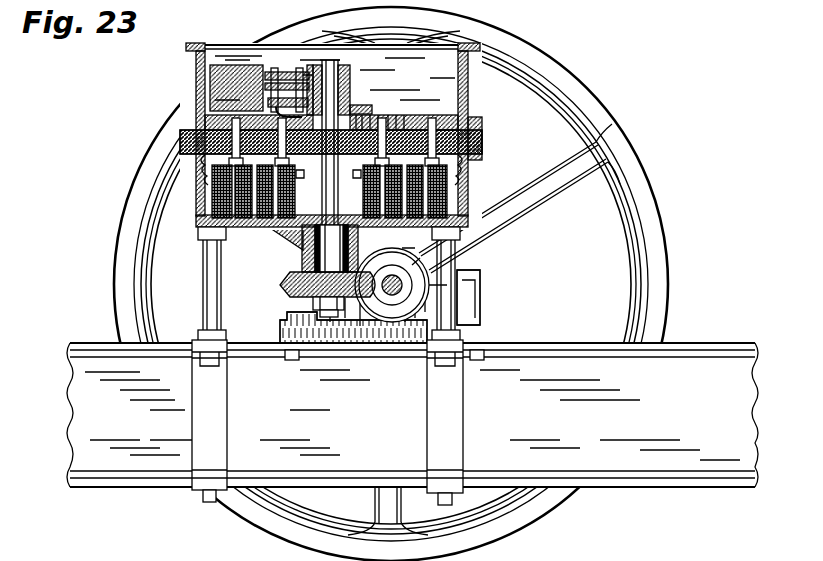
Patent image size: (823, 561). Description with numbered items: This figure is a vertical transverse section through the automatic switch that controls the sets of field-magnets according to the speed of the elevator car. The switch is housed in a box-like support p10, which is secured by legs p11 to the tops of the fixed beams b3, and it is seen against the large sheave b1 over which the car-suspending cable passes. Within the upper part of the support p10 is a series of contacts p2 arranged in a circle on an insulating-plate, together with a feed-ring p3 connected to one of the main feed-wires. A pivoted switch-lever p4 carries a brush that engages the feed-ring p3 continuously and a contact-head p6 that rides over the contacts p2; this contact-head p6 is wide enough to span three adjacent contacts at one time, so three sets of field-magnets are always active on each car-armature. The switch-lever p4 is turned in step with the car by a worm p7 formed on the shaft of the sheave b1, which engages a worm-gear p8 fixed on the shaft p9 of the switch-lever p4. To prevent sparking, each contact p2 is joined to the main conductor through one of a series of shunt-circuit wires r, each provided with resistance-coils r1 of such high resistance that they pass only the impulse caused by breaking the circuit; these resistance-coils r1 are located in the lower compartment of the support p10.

The sheave b1 is at (648, 259).
The fixed beams b3 is at (412, 415).
The contacts p2 is at (208, 119).
The feed-ring p3 is at (376, 114).
The switch-lever p4 is at (283, 68).
The contact-head p6 is at (223, 66).
The worm p7 is at (390, 300).
The worm-gear p8 is at (281, 281).
The shaft p9 is at (304, 250).
The box-like support p10 is at (194, 70).
The legs p11 is at (201, 282).
The shunt-circuit wires r is at (213, 170).
The resistance-coils r1 is at (200, 186).